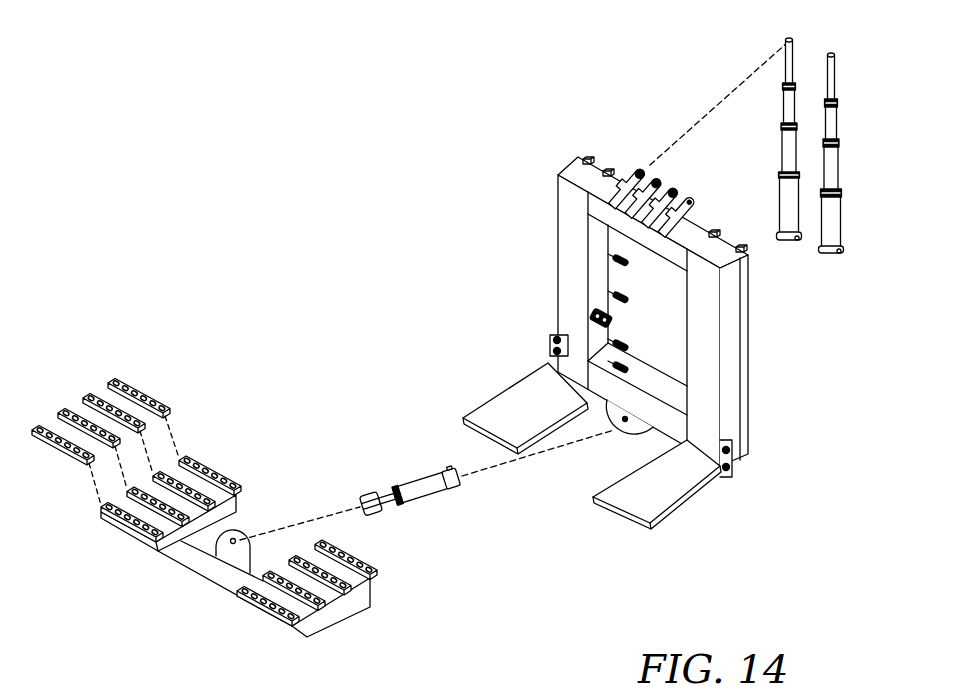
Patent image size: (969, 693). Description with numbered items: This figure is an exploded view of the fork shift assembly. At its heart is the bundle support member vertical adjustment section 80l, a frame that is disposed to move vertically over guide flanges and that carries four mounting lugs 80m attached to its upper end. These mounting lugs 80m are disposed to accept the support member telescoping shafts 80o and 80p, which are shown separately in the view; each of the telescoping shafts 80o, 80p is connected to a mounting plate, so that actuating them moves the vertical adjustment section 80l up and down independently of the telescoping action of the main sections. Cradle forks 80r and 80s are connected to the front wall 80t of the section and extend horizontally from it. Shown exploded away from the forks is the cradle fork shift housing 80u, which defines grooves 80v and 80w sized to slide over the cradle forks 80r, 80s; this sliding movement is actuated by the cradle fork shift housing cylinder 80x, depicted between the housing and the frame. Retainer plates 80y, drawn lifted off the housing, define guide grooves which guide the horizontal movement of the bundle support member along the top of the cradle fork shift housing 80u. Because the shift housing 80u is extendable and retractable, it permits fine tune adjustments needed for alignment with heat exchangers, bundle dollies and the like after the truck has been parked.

The bundle support member vertical adjustment section 80l is at (752, 364).
The mounting lugs 80m is at (657, 138).
The support member telescoping shaft 80o is at (783, 146).
The support member telescoping shaft 80p is at (833, 163).
The cradle fork 80r is at (515, 400).
The cradle fork 80s is at (677, 500).
The front wall 80t is at (573, 293).
The cradle fork shift housing 80u is at (193, 564).
The groove 80v is at (120, 536).
The groove 80w is at (256, 610).
The cradle fork shift housing cylinder 80x is at (435, 508).
The retainer plates 80y is at (33, 428).